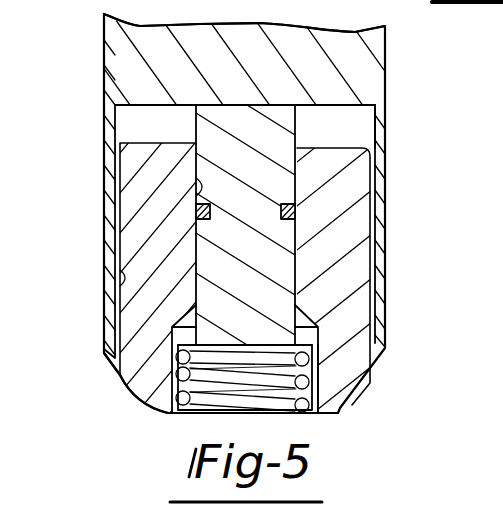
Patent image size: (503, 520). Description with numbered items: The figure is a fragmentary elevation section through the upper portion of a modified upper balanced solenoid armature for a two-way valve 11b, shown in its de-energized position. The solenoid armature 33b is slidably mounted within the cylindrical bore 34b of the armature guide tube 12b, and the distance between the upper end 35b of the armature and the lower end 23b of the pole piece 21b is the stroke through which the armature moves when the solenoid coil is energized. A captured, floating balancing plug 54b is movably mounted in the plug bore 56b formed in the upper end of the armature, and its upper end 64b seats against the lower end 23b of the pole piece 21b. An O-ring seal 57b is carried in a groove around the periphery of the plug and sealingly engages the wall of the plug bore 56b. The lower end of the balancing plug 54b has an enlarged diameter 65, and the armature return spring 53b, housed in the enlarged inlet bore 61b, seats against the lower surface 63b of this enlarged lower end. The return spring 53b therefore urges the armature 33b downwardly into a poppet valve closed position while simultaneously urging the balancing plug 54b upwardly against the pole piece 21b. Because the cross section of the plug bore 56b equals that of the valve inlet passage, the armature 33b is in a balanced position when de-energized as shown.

The valve assembly 11b is at (100, 40).
The pole piece 21b is at (122, 75).
The solenoid armature 33b is at (133, 165).
The plug bore 56b is at (195, 192).
The cylindrical bore 34b is at (120, 280).
The armature guide tube 12b is at (104, 340).
The upper end of balancing plug 64b is at (290, 100).
The lower end of pole piece 23b is at (350, 112).
The upper end of armature 35b is at (330, 146).
The O-ring seal 57b is at (296, 214).
The balancing plug 54b is at (283, 264).
The enlarged diameter lower end of balancing plug 65 is at (300, 329).
The lower surface of enlarged lower end 63b is at (328, 375).
The armature return spring 53b is at (322, 405).
The inlet bore 61b is at (335, 414).